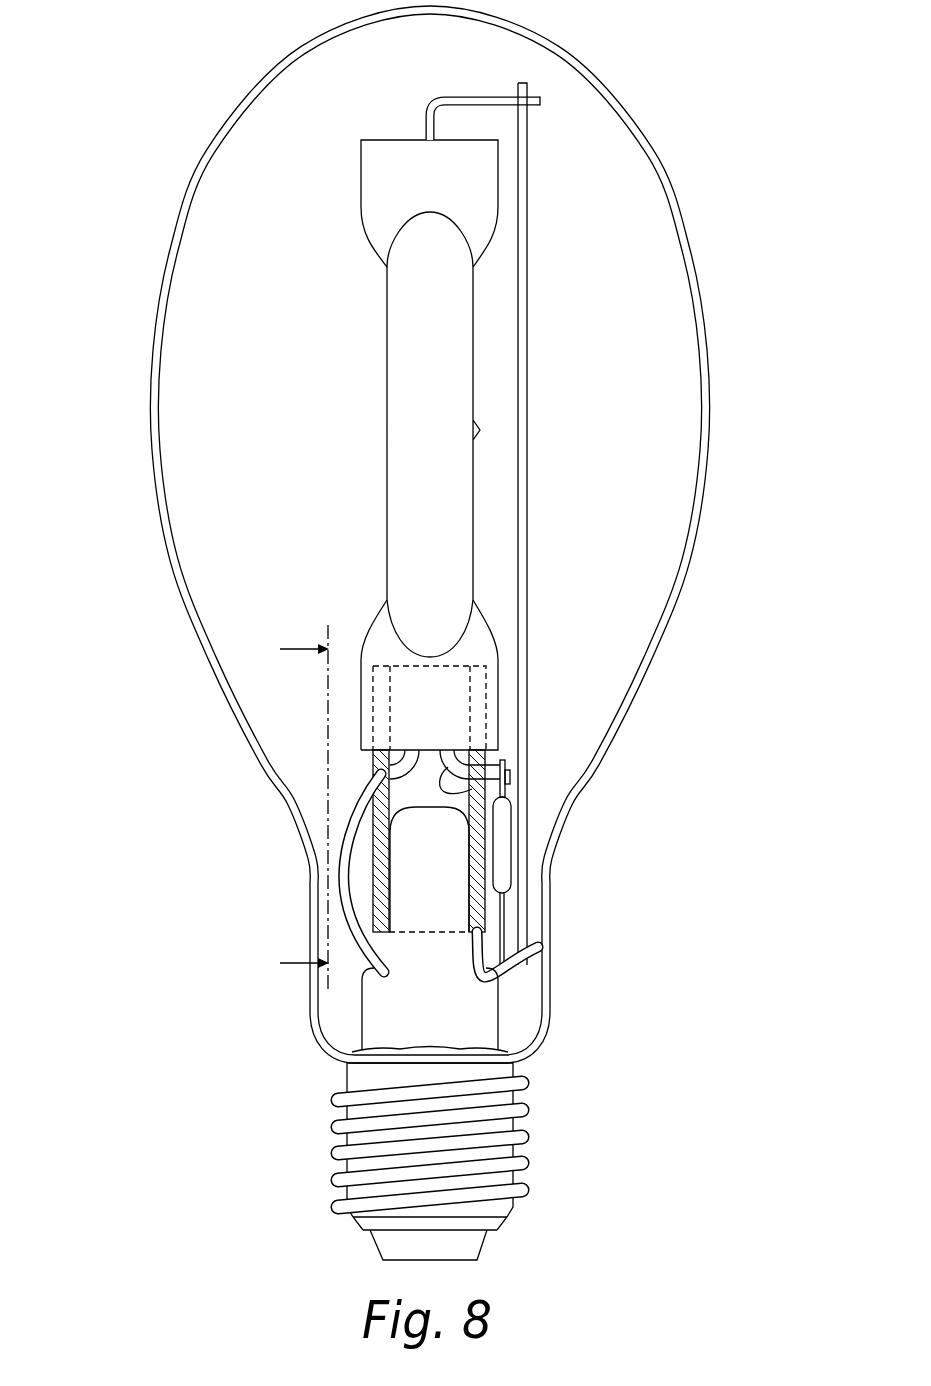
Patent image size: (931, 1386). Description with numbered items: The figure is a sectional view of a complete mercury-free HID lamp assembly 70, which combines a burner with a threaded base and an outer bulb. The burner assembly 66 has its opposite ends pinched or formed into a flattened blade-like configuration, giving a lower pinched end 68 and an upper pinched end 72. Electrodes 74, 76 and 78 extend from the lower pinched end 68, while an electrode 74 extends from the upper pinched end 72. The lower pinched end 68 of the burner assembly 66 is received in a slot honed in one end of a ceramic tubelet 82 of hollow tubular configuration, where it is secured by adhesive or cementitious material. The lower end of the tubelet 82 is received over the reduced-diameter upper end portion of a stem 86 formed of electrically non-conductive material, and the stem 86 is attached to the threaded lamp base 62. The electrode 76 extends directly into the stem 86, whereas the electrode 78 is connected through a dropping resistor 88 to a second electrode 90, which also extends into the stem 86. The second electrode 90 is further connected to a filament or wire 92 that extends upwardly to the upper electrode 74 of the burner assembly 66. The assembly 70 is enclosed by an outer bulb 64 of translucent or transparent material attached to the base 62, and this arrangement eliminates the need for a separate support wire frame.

The threaded lamp base 62 is at (520, 1137).
The outer bulb 64 is at (695, 540).
The burner assembly 66 is at (375, 530).
The pinched end 68 is at (498, 709).
The lamp assembly 70 is at (150, 264).
The pinched end 72 is at (383, 183).
The electrode 74 is at (489, 98).
The electrode 76 is at (372, 790).
The electrode 78 is at (472, 789).
The ceramic tubelet 82 is at (375, 838).
The stem 86 is at (500, 1013).
The dropping resistor 88 is at (500, 843).
The second electrode 90 is at (540, 963).
The filament or wire 92 is at (528, 445).